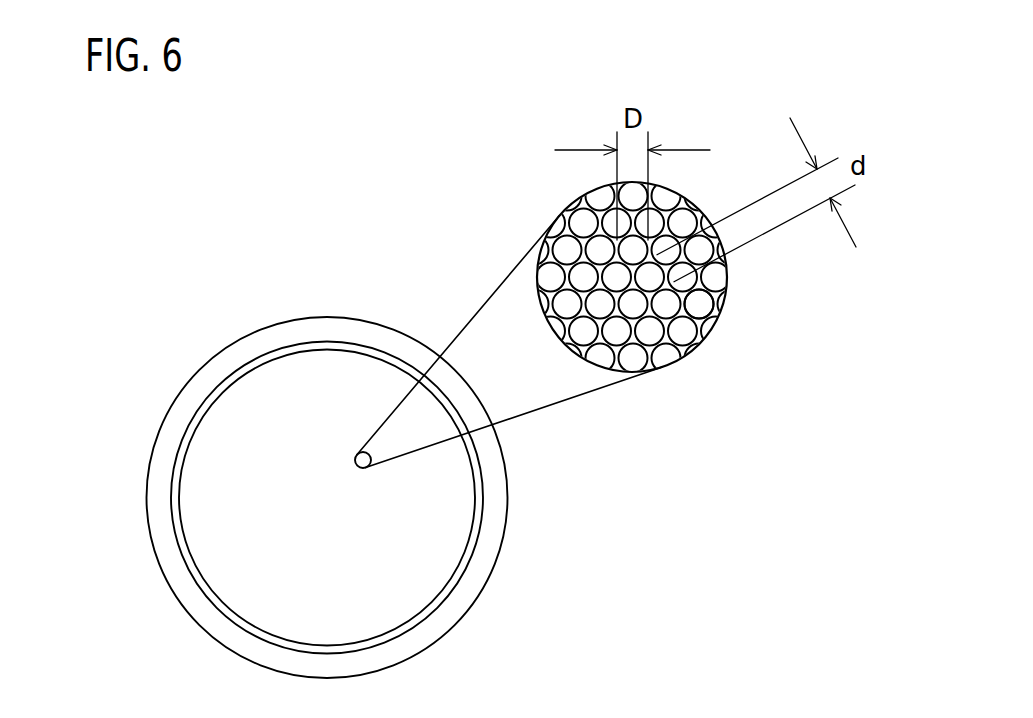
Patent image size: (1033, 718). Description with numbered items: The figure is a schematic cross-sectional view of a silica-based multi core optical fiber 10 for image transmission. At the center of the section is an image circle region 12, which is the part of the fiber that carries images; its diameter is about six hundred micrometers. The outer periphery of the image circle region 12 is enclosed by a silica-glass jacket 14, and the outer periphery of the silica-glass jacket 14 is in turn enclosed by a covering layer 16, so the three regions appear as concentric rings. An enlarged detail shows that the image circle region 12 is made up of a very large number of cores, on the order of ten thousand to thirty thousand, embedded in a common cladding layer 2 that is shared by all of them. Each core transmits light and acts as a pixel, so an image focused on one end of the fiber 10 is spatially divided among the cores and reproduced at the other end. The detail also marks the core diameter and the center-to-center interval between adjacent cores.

The common cladding layer 2 is at (633, 322).
The silica-based multi core optical fiber 10 is at (301, 231).
The image circle region 12 is at (213, 440).
The silica-glass jacket 14 is at (173, 512).
The covering layer 16 is at (188, 592).